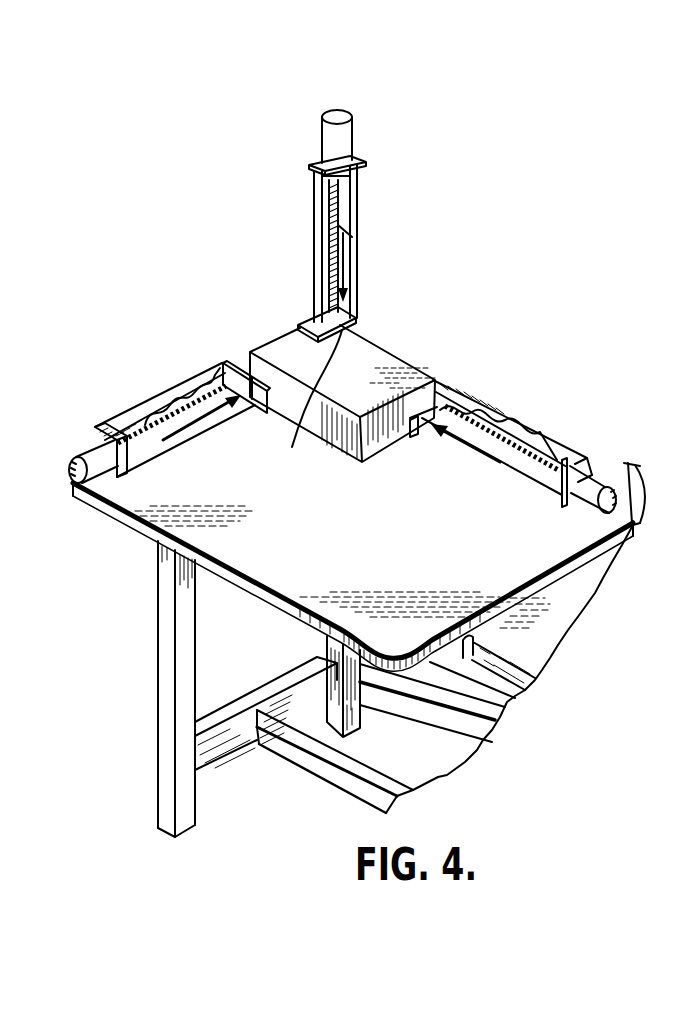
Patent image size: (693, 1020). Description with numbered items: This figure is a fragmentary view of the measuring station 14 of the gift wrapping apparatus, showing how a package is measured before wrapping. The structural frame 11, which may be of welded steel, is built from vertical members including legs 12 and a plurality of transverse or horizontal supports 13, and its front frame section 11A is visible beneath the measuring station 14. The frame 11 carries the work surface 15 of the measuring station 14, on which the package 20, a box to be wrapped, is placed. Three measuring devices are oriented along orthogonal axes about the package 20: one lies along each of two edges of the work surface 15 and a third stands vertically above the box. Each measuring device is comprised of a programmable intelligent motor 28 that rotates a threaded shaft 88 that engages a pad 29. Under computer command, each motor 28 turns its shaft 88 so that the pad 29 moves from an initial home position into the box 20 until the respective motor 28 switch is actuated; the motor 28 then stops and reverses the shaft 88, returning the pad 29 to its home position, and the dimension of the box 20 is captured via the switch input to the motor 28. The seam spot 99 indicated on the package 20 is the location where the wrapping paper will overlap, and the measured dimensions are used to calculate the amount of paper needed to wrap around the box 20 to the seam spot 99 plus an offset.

The structural frame 11 is at (163, 723).
The front frame section 11A is at (358, 783).
The legs 12 is at (189, 834).
The transverse or horizontal supports 13 is at (240, 733).
The measuring station 14 is at (140, 561).
The work surface 15 is at (304, 566).
The package 20 is at (385, 355).
The programmable intelligent motor 28 is at (341, 140).
The pad 29 is at (316, 318).
The threaded shaft 88 is at (330, 233).
The seam spot 99 is at (306, 402).